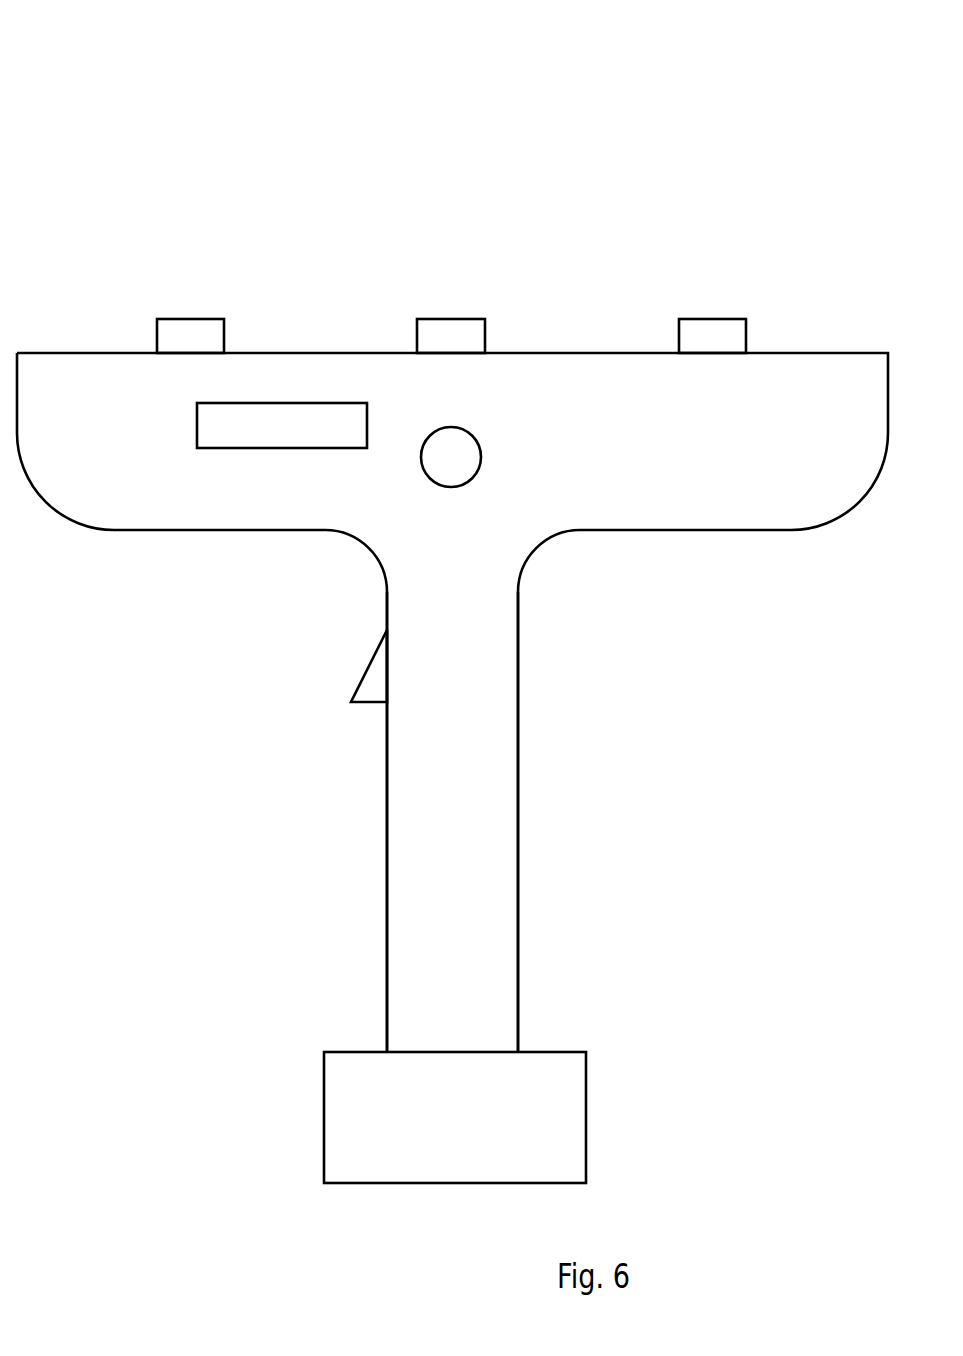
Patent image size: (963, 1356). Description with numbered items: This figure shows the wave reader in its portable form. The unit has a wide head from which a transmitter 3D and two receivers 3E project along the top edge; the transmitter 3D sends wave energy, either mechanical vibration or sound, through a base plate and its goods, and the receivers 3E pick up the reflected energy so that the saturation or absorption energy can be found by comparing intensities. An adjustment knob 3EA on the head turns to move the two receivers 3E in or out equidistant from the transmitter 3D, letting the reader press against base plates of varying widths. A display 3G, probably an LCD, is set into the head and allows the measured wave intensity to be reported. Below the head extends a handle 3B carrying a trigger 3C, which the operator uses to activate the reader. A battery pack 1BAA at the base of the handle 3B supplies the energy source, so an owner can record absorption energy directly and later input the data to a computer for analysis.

The receivers 3E is at (702, 335).
The transmitter 3D is at (332, 495).
The display 3G is at (227, 498).
The adjustment knob 3EA is at (540, 513).
The trigger 3C is at (284, 713).
The handle 3B is at (349, 822).
The battery pack 1BAA is at (375, 1117).